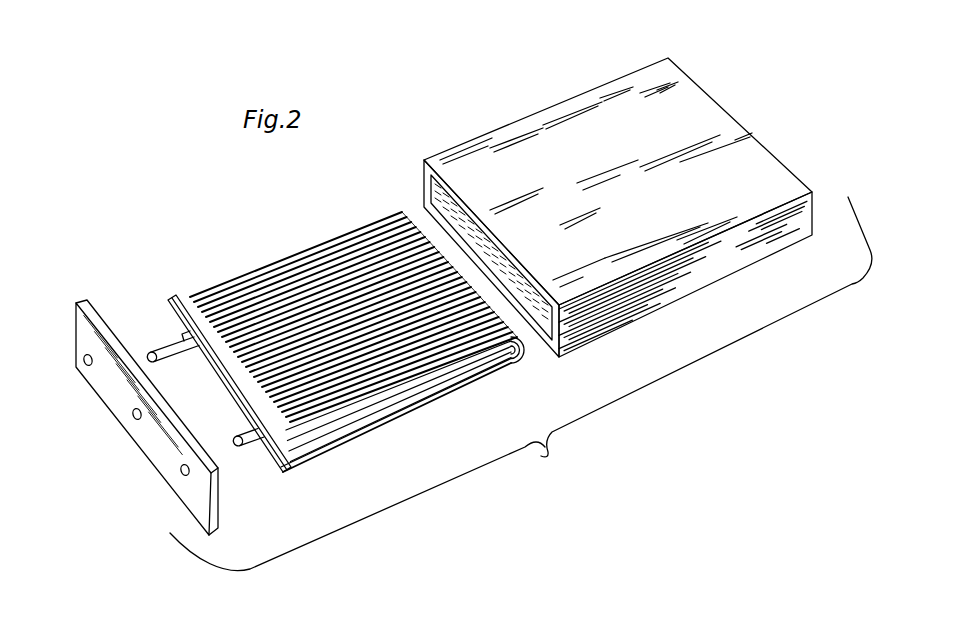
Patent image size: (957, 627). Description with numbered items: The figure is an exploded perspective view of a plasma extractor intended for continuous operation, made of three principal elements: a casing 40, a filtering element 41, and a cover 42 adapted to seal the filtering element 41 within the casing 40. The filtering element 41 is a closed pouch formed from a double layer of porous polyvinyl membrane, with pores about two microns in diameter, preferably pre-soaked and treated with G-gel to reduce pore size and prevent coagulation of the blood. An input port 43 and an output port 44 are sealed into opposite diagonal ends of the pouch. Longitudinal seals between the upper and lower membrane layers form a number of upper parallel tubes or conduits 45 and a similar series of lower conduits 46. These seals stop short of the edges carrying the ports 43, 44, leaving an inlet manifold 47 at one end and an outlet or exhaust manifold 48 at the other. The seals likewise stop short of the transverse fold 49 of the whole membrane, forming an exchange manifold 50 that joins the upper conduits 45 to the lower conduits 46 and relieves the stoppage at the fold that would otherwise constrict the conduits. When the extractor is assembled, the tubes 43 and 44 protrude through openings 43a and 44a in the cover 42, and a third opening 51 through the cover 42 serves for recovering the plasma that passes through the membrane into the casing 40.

The casing 40 is at (560, 92).
The filtering element 41 is at (307, 245).
The cover 42 is at (80, 300).
The input port 43 is at (160, 351).
The opening 43a is at (84, 367).
The output port 44 is at (248, 448).
The opening 44a is at (183, 478).
The upper conduits 45 is at (348, 388).
The lower conduits 46 is at (320, 430).
The inlet manifold 47 is at (176, 295).
The outlet manifold 48 is at (219, 378).
The transverse fold 49 is at (519, 363).
The exchange manifold 50 is at (405, 210).
The third opening 51 is at (133, 421).